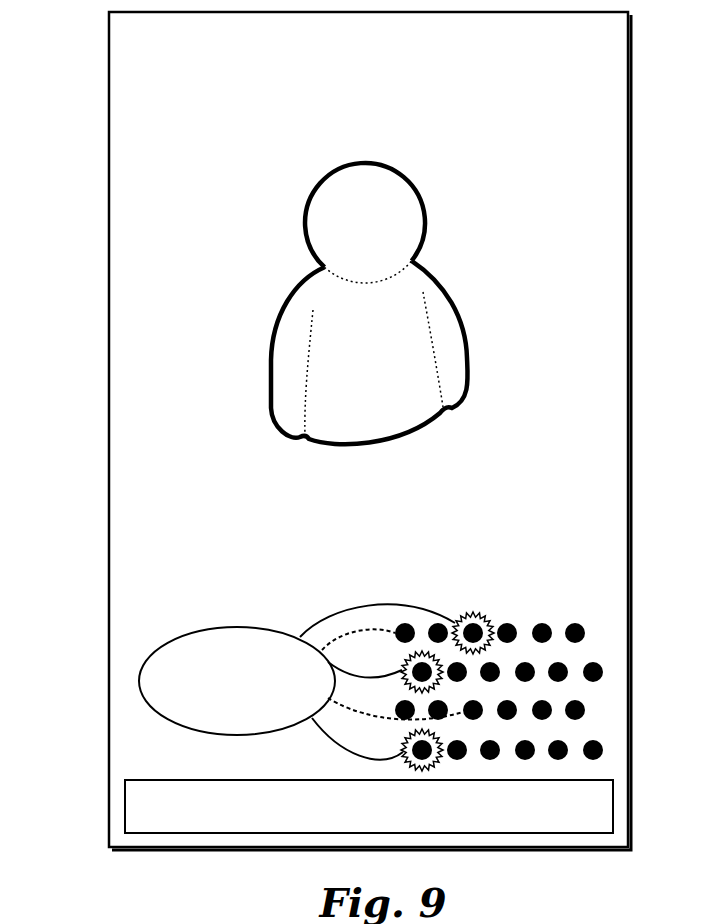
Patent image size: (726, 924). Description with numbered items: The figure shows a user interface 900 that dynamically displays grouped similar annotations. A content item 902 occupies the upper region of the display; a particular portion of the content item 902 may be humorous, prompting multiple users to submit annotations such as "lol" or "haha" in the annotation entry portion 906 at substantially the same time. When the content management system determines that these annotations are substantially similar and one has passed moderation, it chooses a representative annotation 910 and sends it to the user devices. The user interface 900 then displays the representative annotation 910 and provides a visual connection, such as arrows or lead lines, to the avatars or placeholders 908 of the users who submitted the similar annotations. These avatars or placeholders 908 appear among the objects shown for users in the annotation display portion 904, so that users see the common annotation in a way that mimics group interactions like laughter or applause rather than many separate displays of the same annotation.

The user interface 900 is at (109, 470).
The content item 902 is at (622, 250).
The annotation display portion 904 is at (625, 698).
The annotation entry portion 906 is at (613, 803).
The avatars or placeholders 908 is at (515, 589).
The representative annotation 910 is at (186, 633).